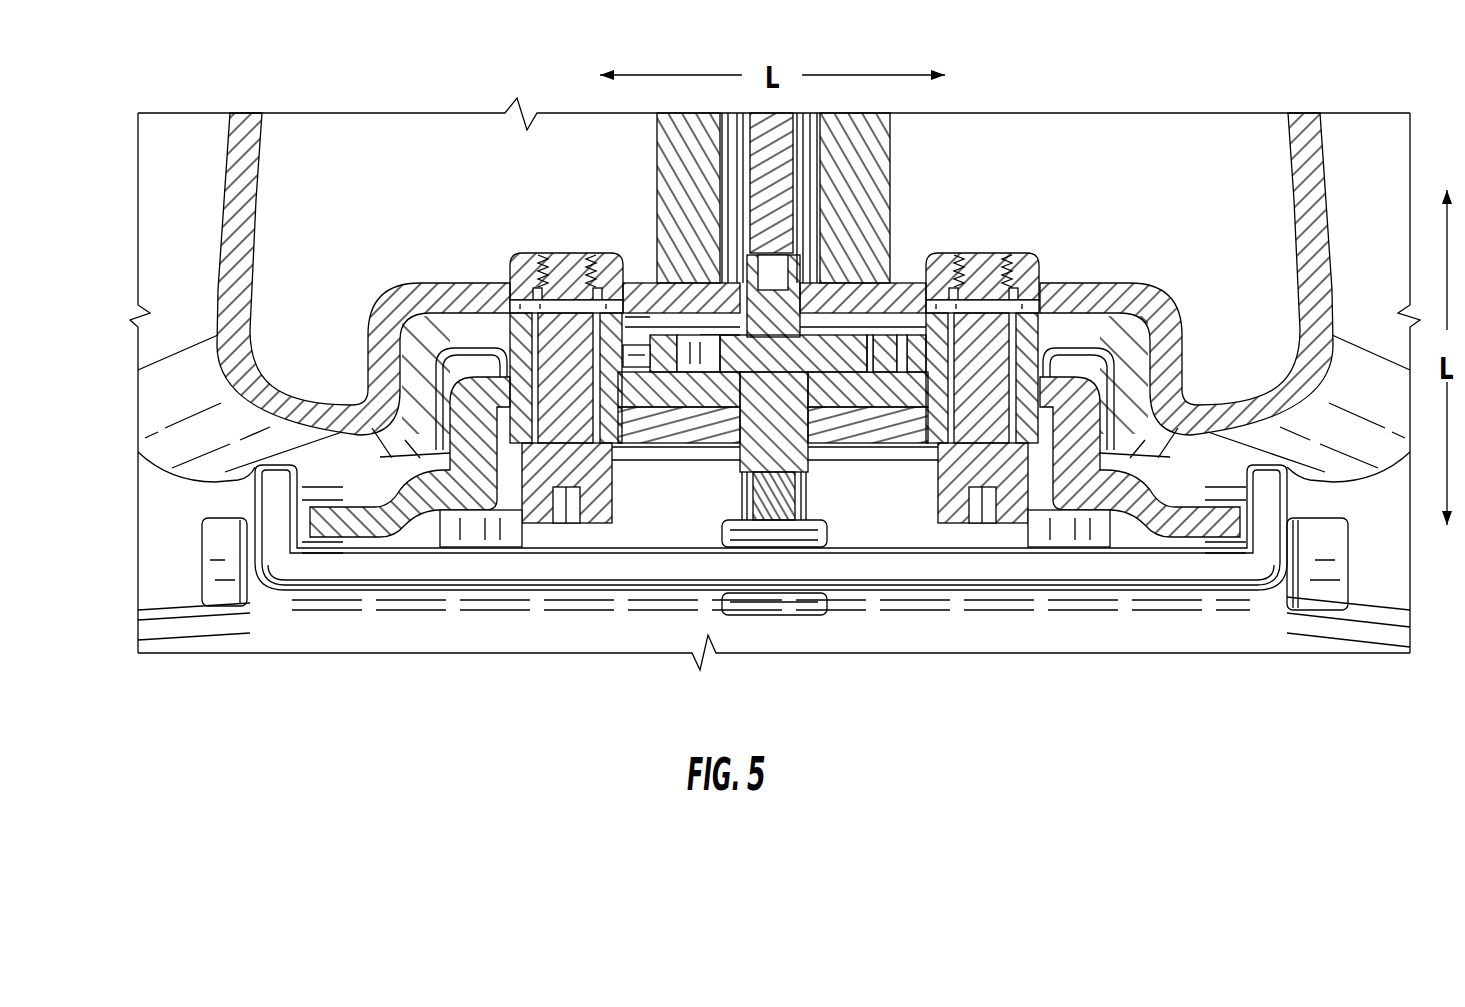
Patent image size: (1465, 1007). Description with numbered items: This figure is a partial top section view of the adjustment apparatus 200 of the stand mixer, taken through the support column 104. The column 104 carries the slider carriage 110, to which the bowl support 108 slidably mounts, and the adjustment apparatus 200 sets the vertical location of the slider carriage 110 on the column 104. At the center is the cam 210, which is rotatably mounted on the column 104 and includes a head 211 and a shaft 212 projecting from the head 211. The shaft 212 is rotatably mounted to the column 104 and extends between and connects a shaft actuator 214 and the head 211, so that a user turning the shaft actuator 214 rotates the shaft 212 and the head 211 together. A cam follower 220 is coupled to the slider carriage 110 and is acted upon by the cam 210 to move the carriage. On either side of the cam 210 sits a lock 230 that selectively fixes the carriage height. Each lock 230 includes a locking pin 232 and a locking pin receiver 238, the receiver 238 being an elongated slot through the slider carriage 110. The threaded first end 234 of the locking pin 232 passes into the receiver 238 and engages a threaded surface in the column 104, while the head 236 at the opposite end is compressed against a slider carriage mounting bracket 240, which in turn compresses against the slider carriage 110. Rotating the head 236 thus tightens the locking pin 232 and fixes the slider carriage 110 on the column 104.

The support column 104 is at (232, 210).
The bowl support 108 is at (200, 547).
The slider carriage 110 is at (380, 522).
The adjustment apparatus 200 is at (878, 328).
The cam 210 is at (800, 325).
The head 211 is at (856, 388).
The shaft 212 is at (788, 410).
The shaft actuator 214 is at (753, 490).
The cam follower 220 is at (697, 352).
The lock 230 is at (588, 528).
The locking pin 232 is at (567, 340).
The first end 234 is at (563, 270).
The head 236 is at (533, 518).
The locking pin receiver 238 is at (521, 349).
The slider carriage mounting bracket 240 is at (695, 425).